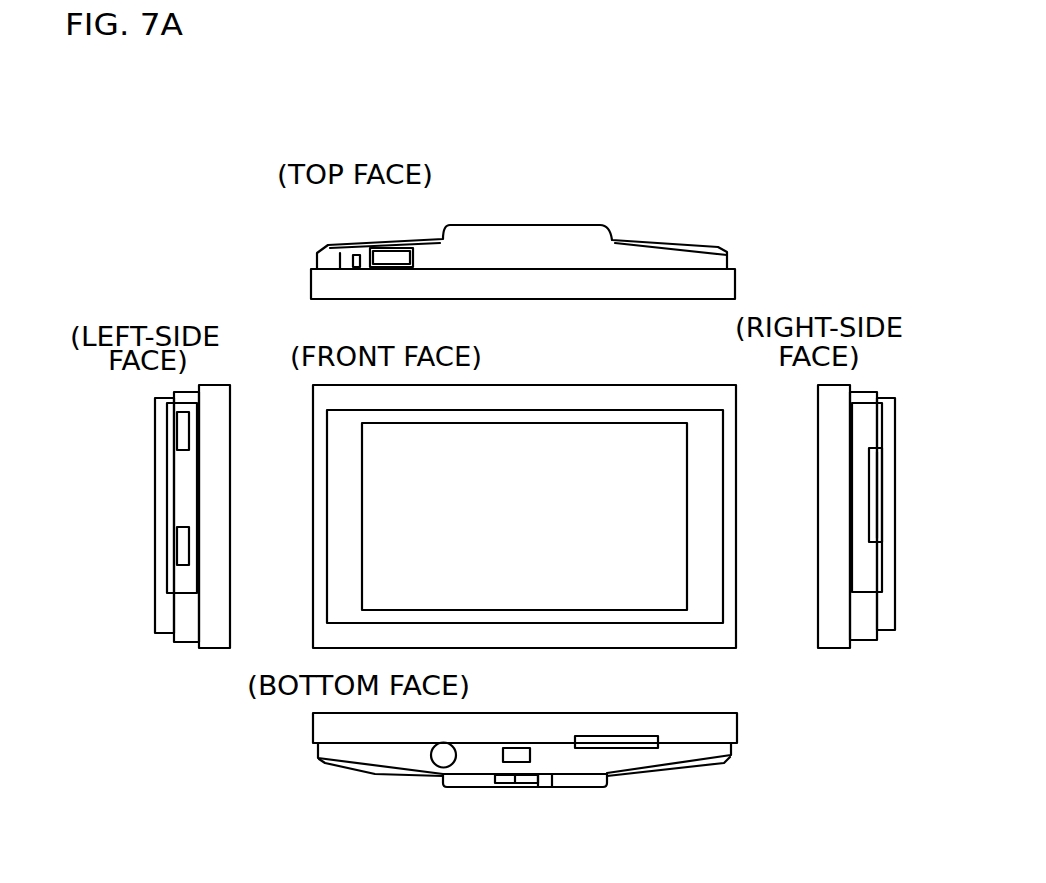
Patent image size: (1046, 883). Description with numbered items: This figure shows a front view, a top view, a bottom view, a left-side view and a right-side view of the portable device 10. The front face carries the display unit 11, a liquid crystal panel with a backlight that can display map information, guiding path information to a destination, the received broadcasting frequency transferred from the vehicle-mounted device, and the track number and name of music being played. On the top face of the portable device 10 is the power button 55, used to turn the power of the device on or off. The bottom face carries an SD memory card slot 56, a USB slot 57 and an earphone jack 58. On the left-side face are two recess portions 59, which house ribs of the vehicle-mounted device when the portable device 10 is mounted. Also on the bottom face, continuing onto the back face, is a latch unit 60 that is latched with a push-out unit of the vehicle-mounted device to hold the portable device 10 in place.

The portable device 10 is at (725, 283).
The display unit 11 is at (652, 433).
The power button 55 is at (385, 258).
The SD memory card slot 56 is at (633, 745).
The USB slot 57 is at (530, 755).
The earphone jack 58 is at (437, 755).
The recess portions 59 is at (183, 432).
The latch unit 60 is at (523, 783).